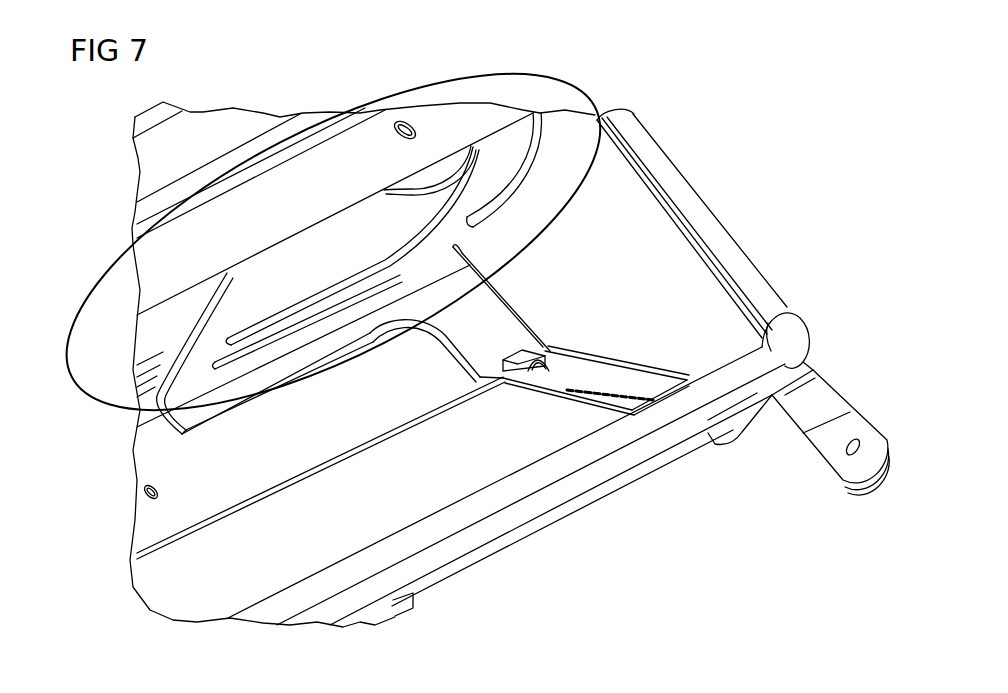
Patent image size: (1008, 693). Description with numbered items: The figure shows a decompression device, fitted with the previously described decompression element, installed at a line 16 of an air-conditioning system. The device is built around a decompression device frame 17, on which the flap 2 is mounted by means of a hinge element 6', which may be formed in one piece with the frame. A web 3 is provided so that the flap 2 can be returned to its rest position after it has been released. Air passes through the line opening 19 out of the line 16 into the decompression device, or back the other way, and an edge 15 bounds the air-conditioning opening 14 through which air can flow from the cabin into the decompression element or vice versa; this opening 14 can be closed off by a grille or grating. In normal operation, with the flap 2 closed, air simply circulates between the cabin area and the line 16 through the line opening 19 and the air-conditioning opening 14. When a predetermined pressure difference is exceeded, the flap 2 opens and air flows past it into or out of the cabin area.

The flap 2 is at (290, 490).
The web 3 is at (633, 393).
The hinge element 6' is at (544, 333).
The air-conditioning opening 14 is at (420, 430).
The edge of an air-conditioning opening 15 is at (758, 288).
The line 16 is at (387, 215).
The decompression device frame 17 is at (650, 210).
The line opening 19 is at (106, 410).